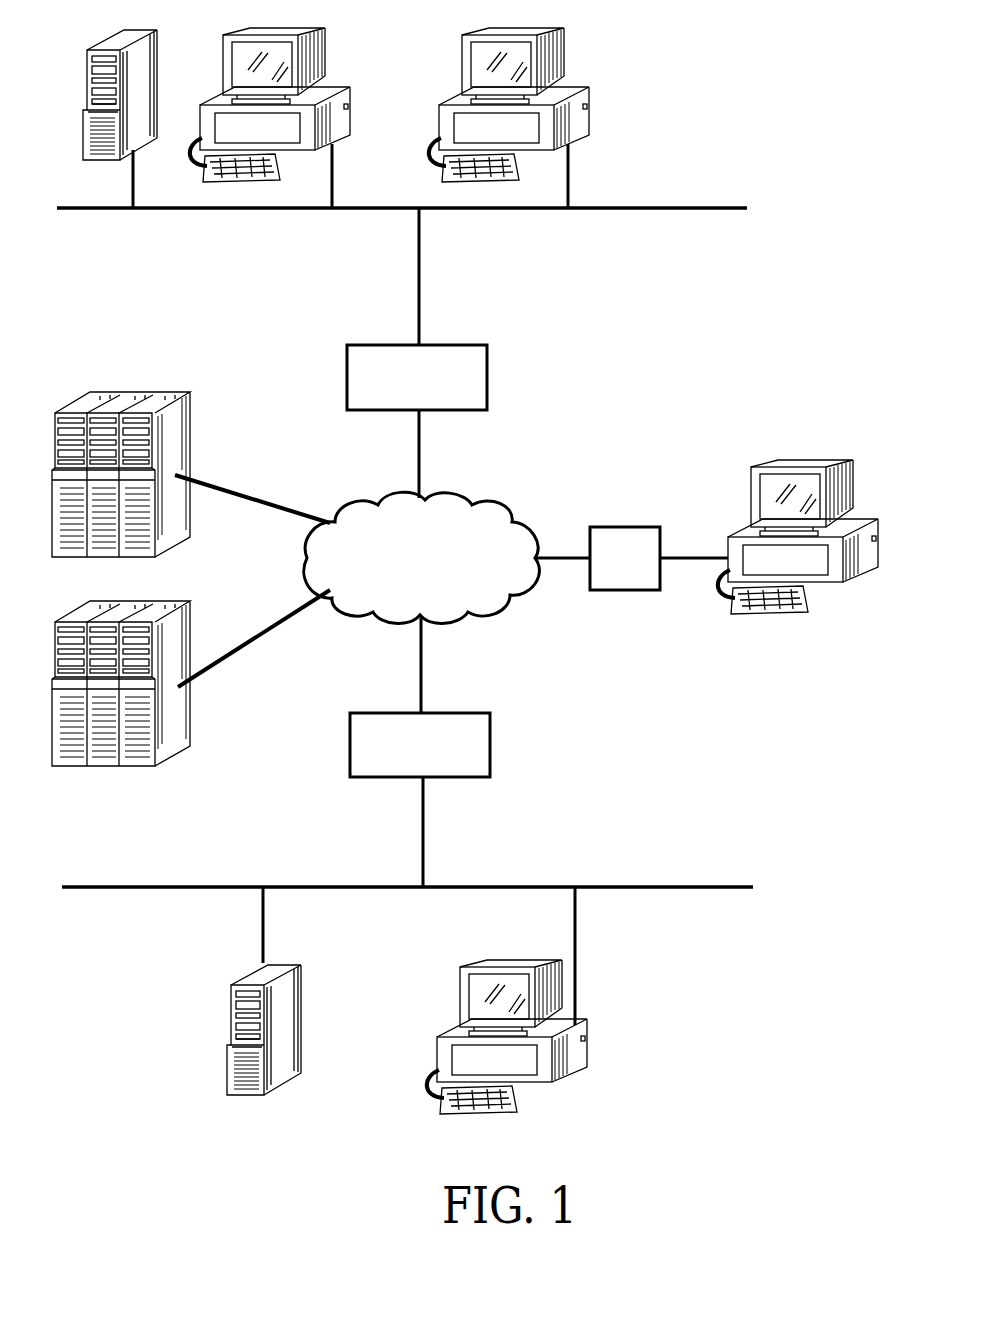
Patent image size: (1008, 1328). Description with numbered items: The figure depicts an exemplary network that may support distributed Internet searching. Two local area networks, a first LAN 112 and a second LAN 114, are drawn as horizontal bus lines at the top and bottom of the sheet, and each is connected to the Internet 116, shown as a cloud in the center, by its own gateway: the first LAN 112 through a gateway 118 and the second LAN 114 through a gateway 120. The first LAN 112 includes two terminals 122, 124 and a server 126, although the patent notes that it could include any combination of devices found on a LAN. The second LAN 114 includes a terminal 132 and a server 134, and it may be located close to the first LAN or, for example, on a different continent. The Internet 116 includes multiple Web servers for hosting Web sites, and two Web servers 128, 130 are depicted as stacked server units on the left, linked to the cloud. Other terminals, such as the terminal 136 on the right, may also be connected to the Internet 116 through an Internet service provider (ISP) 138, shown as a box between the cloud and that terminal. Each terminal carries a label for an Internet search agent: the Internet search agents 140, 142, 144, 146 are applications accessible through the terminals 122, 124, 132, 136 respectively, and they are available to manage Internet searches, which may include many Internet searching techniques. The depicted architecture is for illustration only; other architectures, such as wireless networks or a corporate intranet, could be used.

The first LAN 112 is at (718, 208).
The second LAN 114 is at (723, 887).
The Internet 116 is at (442, 597).
The gateway 118 is at (488, 378).
The gateway 120 is at (491, 745).
The terminal 122 is at (350, 93).
The terminal 124 is at (588, 93).
The server 126 is at (85, 73).
The Web server 128 is at (190, 406).
The Web server 130 is at (190, 615).
The terminal 132 is at (587, 1028).
The server 134 is at (227, 1007).
The terminal 136 is at (877, 527).
The Internet service provider (ISP) 138 is at (625, 527).
The Internet search agent (ISA) 140 is at (215, 123).
The Internet search agent (ISA) 142 is at (454, 123).
The Internet search agent (ISA) 144 is at (452, 1055).
The Internet search agent (ISA) 146 is at (828, 574).